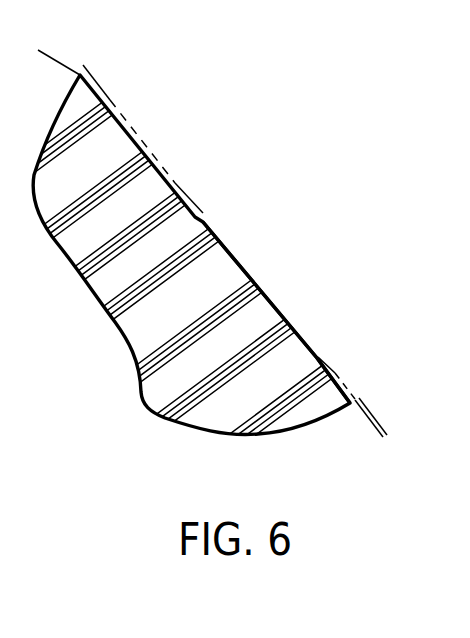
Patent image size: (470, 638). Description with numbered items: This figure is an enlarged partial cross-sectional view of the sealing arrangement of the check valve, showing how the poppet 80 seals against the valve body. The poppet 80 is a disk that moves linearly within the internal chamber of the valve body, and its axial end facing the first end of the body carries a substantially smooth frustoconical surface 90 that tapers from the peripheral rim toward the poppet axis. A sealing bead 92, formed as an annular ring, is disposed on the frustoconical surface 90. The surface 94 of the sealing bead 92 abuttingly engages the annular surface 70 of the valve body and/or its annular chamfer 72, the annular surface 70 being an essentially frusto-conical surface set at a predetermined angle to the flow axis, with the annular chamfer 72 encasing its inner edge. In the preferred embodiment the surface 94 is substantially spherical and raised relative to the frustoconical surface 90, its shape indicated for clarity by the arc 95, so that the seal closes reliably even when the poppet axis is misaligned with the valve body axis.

The poppet 80 is at (195, 120).
The frustoconical surface 90 is at (141, 143).
The sealing bead 92 is at (224, 268).
The surface of the sealing bead 94 is at (277, 298).
The annular surface 70 is at (388, 396).
The annular chamfer 72 is at (369, 412).
The arc 95 is at (370, 430).